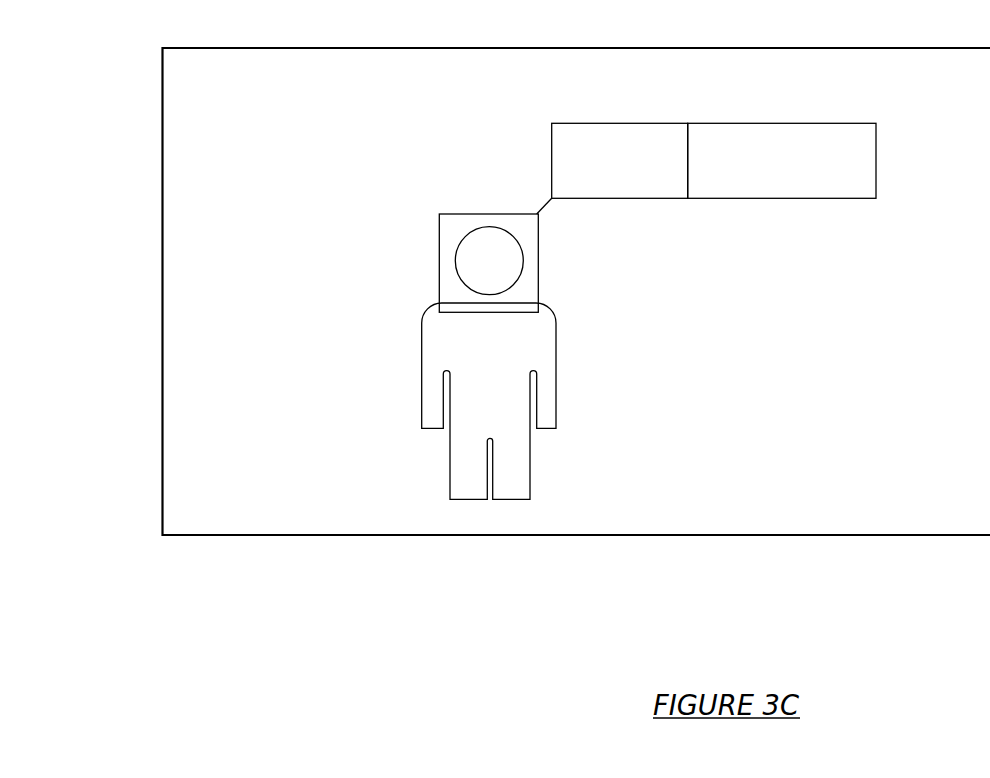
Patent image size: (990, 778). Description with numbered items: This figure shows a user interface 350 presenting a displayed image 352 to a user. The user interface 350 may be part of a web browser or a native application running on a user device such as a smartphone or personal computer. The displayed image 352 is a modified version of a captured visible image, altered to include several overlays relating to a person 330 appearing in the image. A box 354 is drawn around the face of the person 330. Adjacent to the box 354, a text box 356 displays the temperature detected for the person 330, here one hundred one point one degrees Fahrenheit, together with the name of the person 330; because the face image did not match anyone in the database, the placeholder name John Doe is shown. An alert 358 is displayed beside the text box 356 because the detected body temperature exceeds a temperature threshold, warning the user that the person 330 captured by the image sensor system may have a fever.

The person 330 is at (554, 363).
The user interface 350 is at (532, 324).
The displayed image 352 is at (359, 79).
The box 354 is at (537, 254).
The text box 356 is at (617, 198).
The alert 358 is at (788, 198).